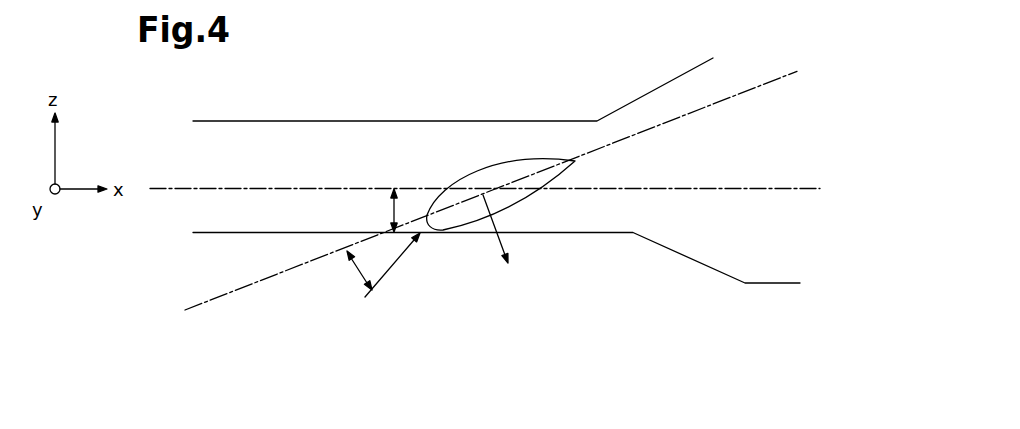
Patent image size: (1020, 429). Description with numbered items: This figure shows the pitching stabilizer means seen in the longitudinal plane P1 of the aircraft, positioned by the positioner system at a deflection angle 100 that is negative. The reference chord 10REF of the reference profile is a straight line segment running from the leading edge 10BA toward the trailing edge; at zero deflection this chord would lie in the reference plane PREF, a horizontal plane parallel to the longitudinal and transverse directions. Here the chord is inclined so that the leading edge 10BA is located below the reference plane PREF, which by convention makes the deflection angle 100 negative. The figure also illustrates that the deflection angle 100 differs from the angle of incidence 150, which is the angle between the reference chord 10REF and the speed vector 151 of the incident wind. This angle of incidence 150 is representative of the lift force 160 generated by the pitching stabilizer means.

The longitudinal plane P1 is at (622, 61).
The reference plane PREF is at (748, 187).
The reference chord 10REF is at (600, 150).
The leading edge 10BA is at (422, 233).
The lift force 160 is at (506, 245).
The deflection angle 100 is at (370, 210).
The speed vector of the incident wind 151 is at (370, 292).
The angle of incidence 150 is at (340, 275).